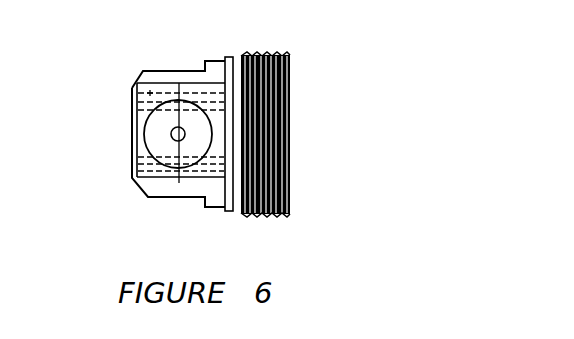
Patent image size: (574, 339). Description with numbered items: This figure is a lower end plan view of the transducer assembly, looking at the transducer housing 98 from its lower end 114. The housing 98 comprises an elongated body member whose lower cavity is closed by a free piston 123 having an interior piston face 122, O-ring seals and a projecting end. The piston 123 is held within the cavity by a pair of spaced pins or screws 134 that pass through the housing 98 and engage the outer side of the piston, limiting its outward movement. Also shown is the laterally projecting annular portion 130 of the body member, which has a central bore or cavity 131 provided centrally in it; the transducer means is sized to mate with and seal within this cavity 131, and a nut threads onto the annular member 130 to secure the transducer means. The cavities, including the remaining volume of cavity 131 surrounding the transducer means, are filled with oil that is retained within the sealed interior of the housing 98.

The transducer housing 98 is at (127, 83).
The lower end 114 is at (157, 92).
The free piston 123 is at (192, 113).
The interior piston face 122 is at (130, 148).
The spaced pins or screws 134 is at (132, 115).
The central bore or cavity 131 is at (292, 173).
The laterally projecting annular portion 130 is at (253, 219).